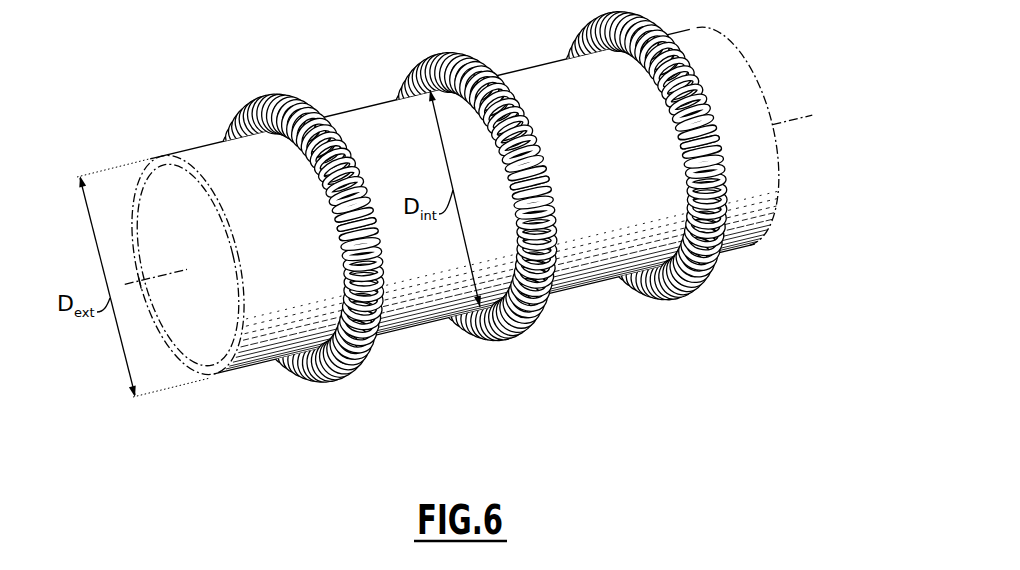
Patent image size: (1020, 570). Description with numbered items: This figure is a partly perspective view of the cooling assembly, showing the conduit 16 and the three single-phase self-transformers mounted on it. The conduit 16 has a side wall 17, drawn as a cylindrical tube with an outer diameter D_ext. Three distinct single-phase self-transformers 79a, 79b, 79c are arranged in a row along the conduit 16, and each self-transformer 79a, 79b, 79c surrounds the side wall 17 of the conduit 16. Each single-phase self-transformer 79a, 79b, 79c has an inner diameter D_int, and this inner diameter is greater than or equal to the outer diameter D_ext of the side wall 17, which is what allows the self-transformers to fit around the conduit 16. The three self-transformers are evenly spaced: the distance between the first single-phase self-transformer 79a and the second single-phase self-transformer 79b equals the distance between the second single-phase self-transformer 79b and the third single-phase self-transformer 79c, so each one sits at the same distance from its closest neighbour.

The conduit 16 is at (249, 370).
The side wall 17 is at (203, 158).
The first single-phase self-transformer 79a is at (347, 378).
The second single-phase self-transformer 79b is at (518, 335).
The third single-phase self-transformer 79c is at (695, 292).